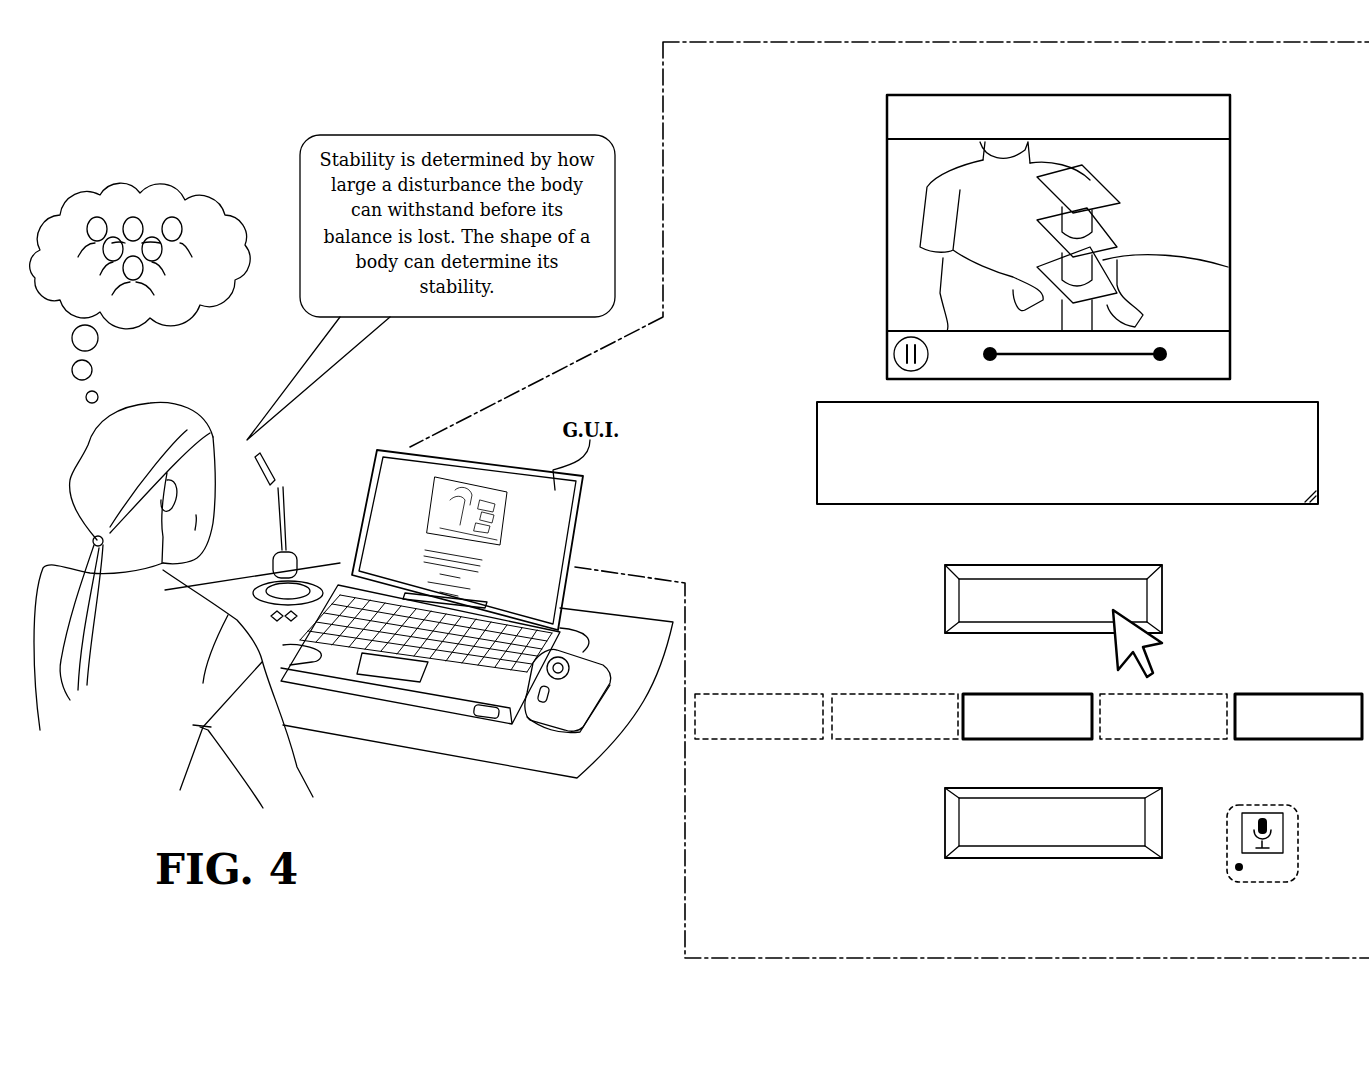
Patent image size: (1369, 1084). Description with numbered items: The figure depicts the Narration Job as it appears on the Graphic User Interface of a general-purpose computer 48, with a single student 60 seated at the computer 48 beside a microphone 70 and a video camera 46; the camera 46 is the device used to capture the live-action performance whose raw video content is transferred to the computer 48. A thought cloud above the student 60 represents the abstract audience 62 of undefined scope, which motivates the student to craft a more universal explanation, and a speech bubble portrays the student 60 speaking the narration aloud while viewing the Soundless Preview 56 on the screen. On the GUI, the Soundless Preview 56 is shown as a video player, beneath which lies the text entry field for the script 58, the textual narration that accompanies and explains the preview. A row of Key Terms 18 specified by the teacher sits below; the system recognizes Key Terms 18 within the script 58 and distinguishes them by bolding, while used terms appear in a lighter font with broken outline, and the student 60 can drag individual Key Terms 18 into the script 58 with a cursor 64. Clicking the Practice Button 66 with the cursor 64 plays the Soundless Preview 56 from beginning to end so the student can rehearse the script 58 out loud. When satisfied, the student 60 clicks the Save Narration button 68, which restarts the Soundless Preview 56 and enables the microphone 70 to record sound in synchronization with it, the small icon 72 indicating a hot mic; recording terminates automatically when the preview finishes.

The key terms 18 is at (755, 658).
The video camera 46 is at (553, 735).
The general-purpose computer 48 is at (412, 706).
The soundless preview 56 is at (888, 170).
The script 58 is at (840, 403).
The student 60 is at (122, 717).
The abstract audience 62 is at (133, 218).
The cursor 64 is at (1113, 654).
The practice button 66 is at (1143, 590).
The save narration button 68 is at (945, 850).
The microphone 70 is at (280, 490).
The icon 72 is at (1270, 884).